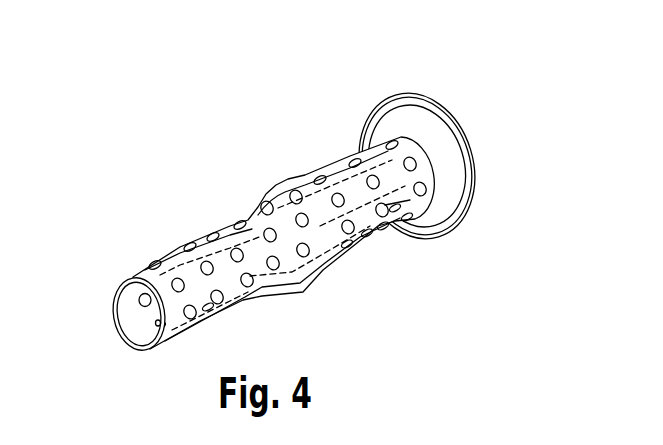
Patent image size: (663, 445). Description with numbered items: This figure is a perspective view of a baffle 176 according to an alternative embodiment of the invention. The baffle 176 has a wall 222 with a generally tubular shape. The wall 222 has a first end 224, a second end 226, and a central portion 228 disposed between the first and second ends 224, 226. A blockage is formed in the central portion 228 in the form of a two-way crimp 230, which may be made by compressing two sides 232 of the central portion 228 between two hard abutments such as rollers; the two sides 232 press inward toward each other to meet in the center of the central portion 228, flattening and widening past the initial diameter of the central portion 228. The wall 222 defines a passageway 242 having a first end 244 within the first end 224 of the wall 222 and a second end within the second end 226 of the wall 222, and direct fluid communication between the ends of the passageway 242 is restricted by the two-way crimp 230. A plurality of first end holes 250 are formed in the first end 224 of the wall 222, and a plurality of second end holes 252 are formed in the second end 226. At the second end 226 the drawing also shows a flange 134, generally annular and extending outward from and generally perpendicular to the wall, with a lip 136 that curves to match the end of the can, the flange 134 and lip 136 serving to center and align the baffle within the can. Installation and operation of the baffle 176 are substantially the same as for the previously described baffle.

The baffle 176 is at (259, 100).
The wall 222 is at (363, 260).
The first end 224 is at (204, 322).
The second end 226 is at (405, 221).
The central portion 228 is at (318, 176).
The two-way crimp 230 is at (257, 179).
The two sides 232 is at (253, 200).
The passageway 242 is at (134, 326).
The first end of the passageway 244 is at (138, 300).
The first end holes 250 is at (184, 242).
The second end holes 252 is at (352, 158).
The flange 134 is at (472, 213).
The lip 136 is at (443, 115).